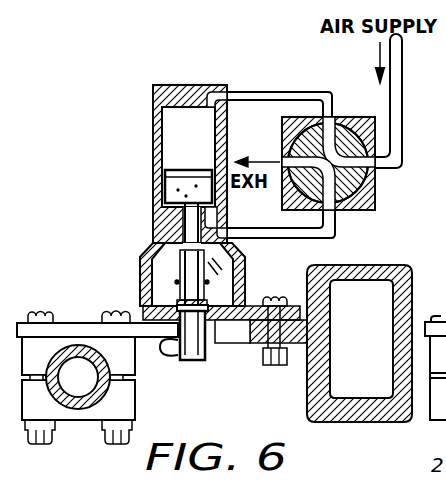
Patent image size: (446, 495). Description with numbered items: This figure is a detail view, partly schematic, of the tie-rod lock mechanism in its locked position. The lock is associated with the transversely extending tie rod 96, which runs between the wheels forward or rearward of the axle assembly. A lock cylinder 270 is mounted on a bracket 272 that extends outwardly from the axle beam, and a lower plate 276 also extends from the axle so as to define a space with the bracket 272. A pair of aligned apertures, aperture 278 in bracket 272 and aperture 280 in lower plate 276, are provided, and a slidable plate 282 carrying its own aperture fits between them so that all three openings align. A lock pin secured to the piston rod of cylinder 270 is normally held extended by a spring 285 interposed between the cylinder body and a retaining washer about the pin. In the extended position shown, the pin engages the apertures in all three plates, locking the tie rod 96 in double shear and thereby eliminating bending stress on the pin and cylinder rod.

The lock cylinder 270 is at (196, 85).
The aperture 278 is at (139, 265).
The spring 285 is at (207, 283).
The bracket 272 is at (255, 300).
The lower plate 276 is at (245, 347).
The plate 282 is at (63, 322).
The aperture 280 is at (175, 356).
The tie rod 96 is at (104, 399).